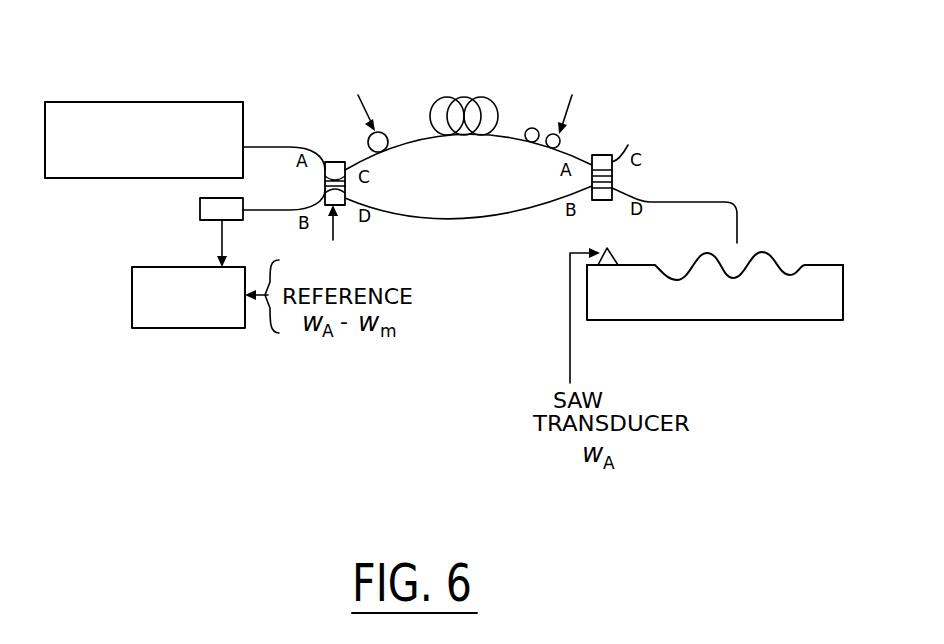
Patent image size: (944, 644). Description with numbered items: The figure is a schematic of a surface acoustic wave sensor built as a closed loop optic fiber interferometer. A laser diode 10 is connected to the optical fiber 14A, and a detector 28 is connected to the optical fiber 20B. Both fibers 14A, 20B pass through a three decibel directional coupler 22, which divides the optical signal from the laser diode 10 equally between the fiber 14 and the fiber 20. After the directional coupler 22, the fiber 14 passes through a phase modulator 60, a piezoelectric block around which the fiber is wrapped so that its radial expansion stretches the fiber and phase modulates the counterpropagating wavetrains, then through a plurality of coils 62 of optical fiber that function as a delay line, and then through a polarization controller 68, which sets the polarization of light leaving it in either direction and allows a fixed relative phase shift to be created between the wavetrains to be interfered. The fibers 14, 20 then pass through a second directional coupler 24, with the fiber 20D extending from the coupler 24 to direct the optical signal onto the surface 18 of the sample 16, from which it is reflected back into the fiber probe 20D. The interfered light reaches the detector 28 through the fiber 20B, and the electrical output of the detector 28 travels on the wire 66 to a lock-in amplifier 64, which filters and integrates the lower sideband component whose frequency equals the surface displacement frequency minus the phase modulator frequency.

The laser diode 10 is at (151, 102).
The optical fiber 14A is at (290, 147).
The optical fiber 20B is at (284, 210).
The directional coupler 22 is at (333, 162).
The second directional coupler 24 is at (600, 155).
The detector 28 is at (197, 218).
The wire 66 is at (230, 228).
The lock-in amplifier 64 is at (132, 278).
The phase modulator 60 is at (387, 132).
The coils of optical fiber 62 is at (464, 97).
The polarization controller 68 is at (533, 128).
The fiber 14 is at (490, 138).
The fiber 20 is at (468, 220).
The fiber probe 20D is at (744, 226).
The sample 16 is at (827, 300).
The surface 18 is at (823, 265).